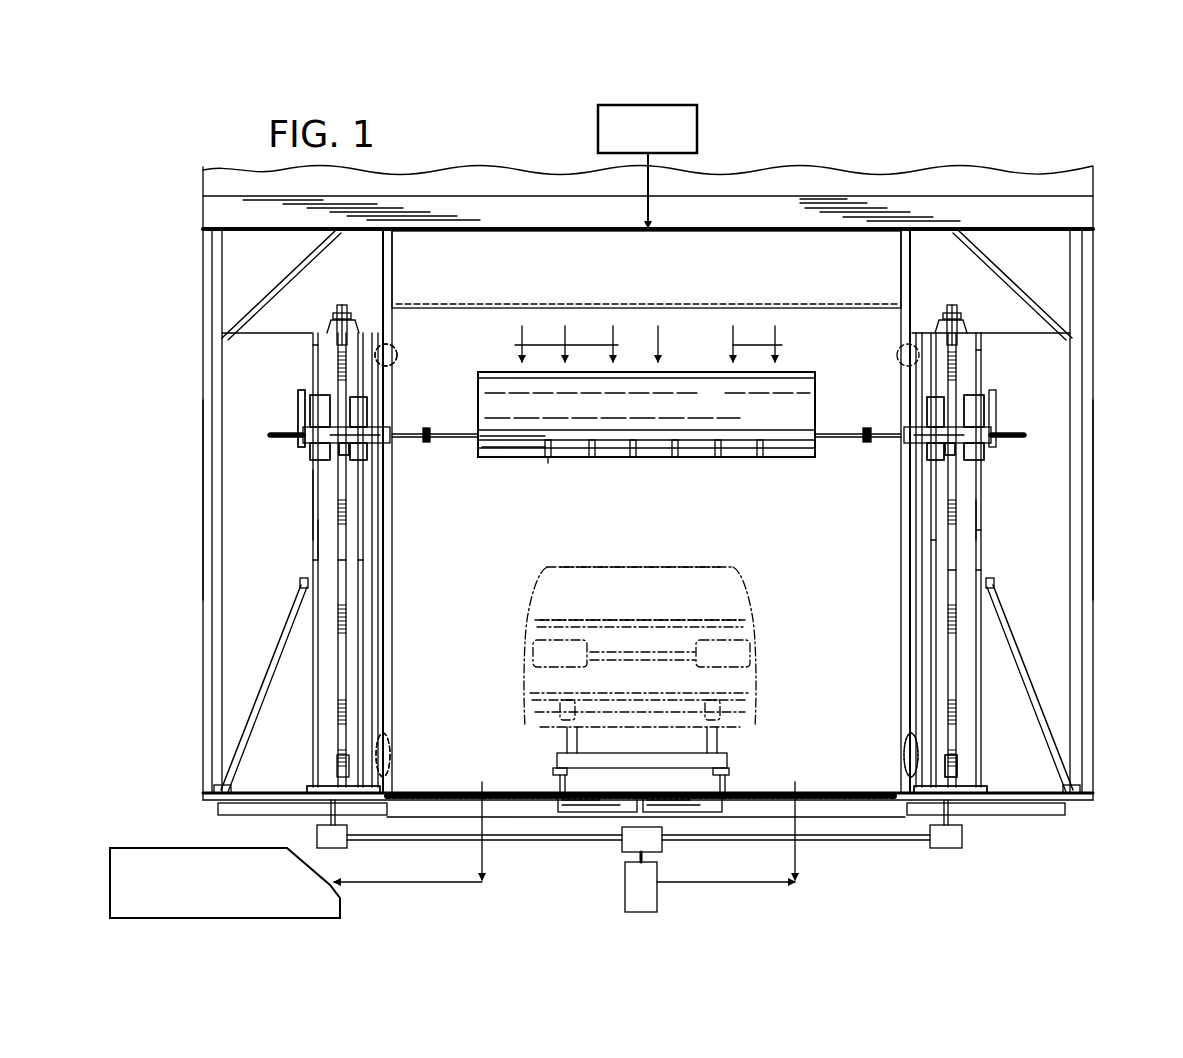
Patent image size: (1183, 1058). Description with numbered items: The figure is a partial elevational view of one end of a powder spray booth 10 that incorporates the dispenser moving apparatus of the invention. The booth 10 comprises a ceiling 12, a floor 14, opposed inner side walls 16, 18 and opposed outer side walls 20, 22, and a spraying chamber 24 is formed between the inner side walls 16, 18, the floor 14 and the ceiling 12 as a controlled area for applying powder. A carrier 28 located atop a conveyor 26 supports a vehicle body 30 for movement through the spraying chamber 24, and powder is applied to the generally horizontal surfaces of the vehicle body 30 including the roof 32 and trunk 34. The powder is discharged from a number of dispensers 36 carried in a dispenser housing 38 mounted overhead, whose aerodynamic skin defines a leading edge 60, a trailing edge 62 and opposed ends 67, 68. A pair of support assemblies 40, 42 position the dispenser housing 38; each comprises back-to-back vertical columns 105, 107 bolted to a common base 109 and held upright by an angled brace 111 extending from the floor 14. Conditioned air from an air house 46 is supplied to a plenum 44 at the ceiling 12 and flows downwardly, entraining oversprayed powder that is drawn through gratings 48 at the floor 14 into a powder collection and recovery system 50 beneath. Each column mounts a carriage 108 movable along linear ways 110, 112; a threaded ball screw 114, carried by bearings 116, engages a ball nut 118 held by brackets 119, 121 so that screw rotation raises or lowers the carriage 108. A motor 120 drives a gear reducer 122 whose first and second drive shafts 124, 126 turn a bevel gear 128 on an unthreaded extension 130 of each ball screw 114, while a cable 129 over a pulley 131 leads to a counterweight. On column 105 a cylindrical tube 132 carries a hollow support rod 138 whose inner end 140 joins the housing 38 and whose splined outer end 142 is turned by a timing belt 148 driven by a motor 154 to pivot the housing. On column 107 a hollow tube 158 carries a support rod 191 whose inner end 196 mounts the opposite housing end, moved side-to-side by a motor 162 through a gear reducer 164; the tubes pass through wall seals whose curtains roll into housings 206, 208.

The powder spray booth 10 is at (1138, 190).
The ceiling 12 is at (462, 372).
The floor 14 is at (492, 790).
The inner side wall 16 is at (398, 612).
The inner side wall 18 is at (890, 580).
The outer side wall 20 is at (182, 493).
The outer side wall 22 is at (1097, 493).
The spraying chamber 24 is at (600, 535).
The conveyor 26 is at (738, 782).
The carrier 28 is at (727, 760).
The vehicle body 30 is at (760, 648).
The roof 32 is at (645, 567).
The trunk 34 is at (650, 625).
The dispensers 36 is at (632, 465).
The dispenser housing 38 is at (435, 466).
The support assembly 40 is at (290, 533).
The support assembly 42 is at (990, 512).
The plenum 44 is at (678, 285).
The air house 46 is at (700, 128).
The gratings 48 is at (522, 773).
The powder collection and recovery system 50 is at (175, 838).
The leading edge 60 is at (700, 383).
The trailing edge 62 is at (655, 462).
The end 67 is at (476, 395).
The end 68 is at (817, 392).
The vertical column 105 is at (308, 503).
The vertical column 107 is at (985, 534).
The carriage 108 is at (368, 416).
The base 109 is at (303, 787).
The linear way 110 is at (313, 555).
The angled brace 111 is at (275, 648).
The linear way 112 is at (362, 568).
The threaded ball screw 114 is at (345, 565).
The bearings 116 is at (333, 760).
The ball nut 118 is at (367, 452).
The bracket 119 is at (310, 458).
The motor 120 is at (645, 900).
The bracket 121 is at (350, 452).
The gear reducer 122 is at (620, 845).
The first drive shaft 124 is at (548, 835).
The second drive shaft 126 is at (710, 848).
The bevel gear 128 is at (348, 848).
The cable 129 is at (325, 378).
The unthreaded extension 130 is at (328, 817).
The pulley 131 is at (345, 300).
The cylindrical tube 132 is at (490, 426).
The hollow support rod 138 is at (482, 430).
The inner end 140 is at (510, 434).
The outer end 142 is at (268, 436).
The timing belt 148 is at (298, 450).
The motor 154 is at (330, 400).
The hollow tube 158 is at (1000, 425).
The motor 162 is at (1000, 370).
The gear reducer 164 is at (1000, 390).
The hollow support rod 191 is at (868, 426).
The inner end 196 is at (818, 445).
The housing 206 is at (396, 350).
The housing 208 is at (378, 733).